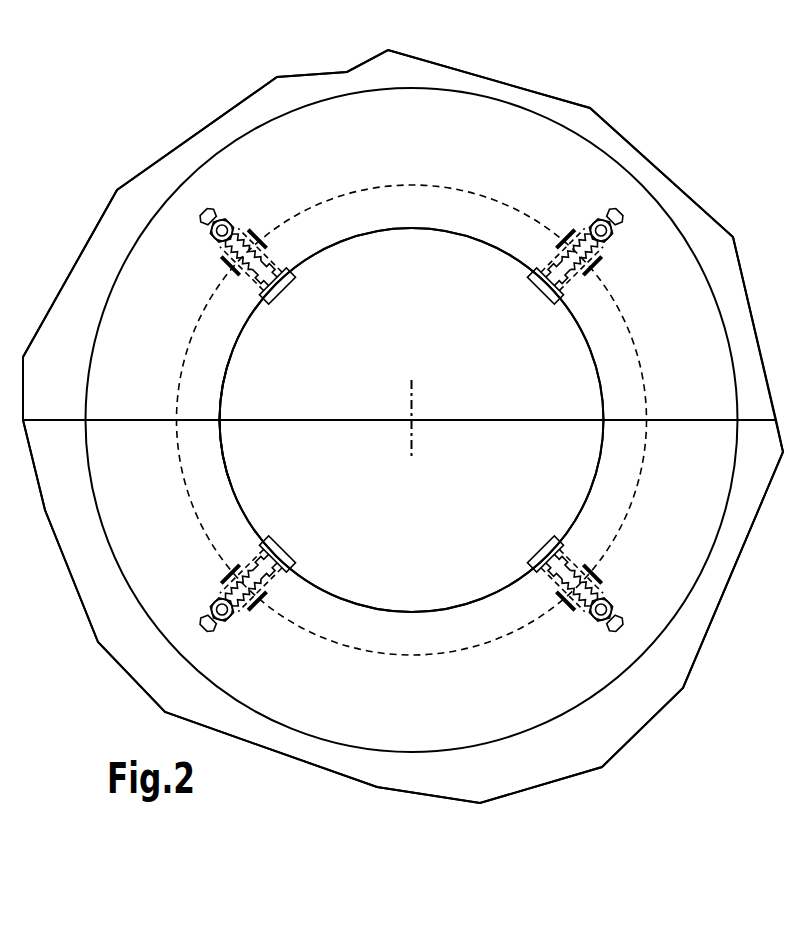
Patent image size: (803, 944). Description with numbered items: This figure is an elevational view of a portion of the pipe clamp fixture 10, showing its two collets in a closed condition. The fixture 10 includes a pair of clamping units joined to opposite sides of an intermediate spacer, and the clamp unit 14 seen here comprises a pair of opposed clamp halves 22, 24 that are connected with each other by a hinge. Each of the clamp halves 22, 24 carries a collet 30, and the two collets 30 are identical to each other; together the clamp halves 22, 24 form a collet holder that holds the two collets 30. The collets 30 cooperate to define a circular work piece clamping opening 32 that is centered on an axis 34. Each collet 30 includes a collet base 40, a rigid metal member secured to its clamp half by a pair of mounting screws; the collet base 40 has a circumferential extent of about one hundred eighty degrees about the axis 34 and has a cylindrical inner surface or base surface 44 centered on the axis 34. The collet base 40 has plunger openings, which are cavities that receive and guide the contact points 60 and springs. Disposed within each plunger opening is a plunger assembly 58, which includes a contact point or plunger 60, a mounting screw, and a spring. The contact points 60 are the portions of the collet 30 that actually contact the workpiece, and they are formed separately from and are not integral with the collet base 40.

The pipe clamp fixture 10 is at (120, 690).
The clamp unit 14 is at (90, 652).
The clamp half 22 is at (718, 242).
The clamp half 24 is at (707, 597).
The collet 30 is at (672, 214).
The work piece clamping opening 32 is at (482, 456).
The axis 34 is at (412, 420).
The collet base 40 is at (352, 238).
The base surface 44 is at (234, 357).
The plunger assembly 58 is at (253, 222).
The contact point 60 is at (285, 291).